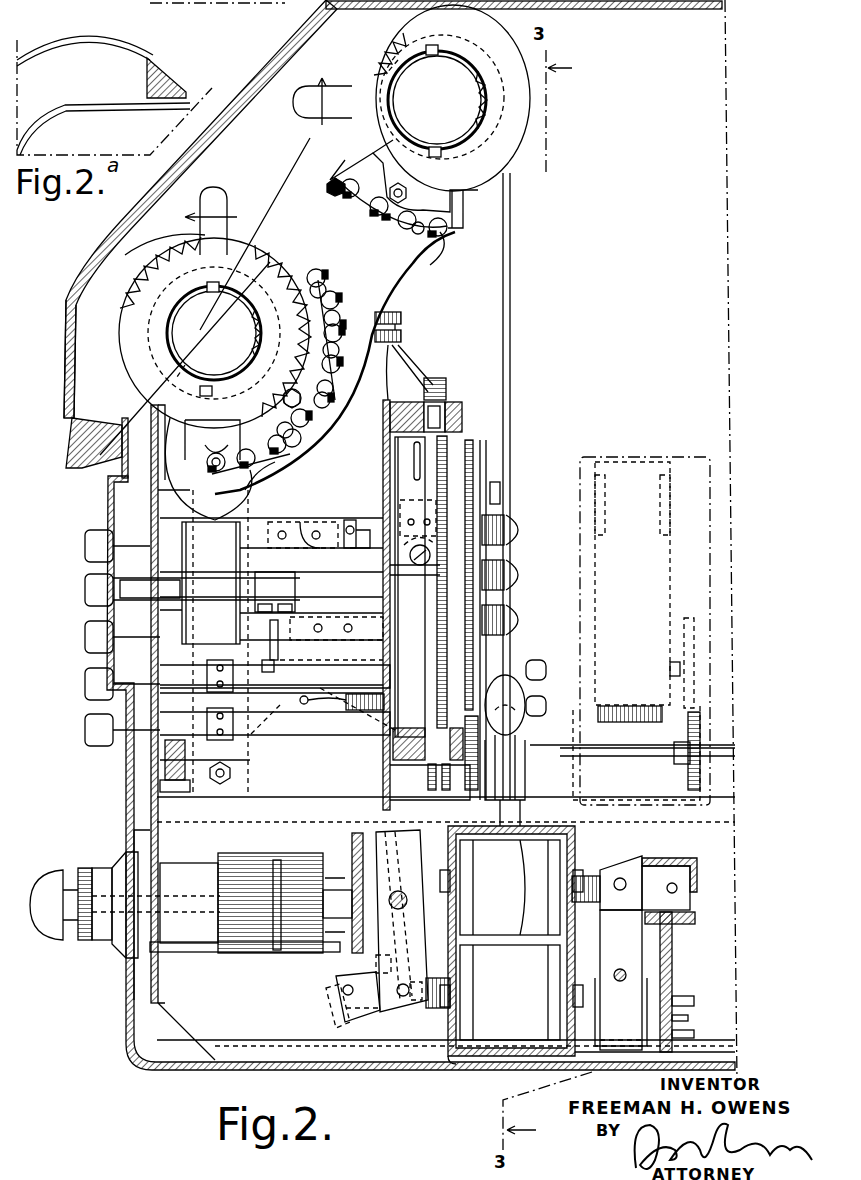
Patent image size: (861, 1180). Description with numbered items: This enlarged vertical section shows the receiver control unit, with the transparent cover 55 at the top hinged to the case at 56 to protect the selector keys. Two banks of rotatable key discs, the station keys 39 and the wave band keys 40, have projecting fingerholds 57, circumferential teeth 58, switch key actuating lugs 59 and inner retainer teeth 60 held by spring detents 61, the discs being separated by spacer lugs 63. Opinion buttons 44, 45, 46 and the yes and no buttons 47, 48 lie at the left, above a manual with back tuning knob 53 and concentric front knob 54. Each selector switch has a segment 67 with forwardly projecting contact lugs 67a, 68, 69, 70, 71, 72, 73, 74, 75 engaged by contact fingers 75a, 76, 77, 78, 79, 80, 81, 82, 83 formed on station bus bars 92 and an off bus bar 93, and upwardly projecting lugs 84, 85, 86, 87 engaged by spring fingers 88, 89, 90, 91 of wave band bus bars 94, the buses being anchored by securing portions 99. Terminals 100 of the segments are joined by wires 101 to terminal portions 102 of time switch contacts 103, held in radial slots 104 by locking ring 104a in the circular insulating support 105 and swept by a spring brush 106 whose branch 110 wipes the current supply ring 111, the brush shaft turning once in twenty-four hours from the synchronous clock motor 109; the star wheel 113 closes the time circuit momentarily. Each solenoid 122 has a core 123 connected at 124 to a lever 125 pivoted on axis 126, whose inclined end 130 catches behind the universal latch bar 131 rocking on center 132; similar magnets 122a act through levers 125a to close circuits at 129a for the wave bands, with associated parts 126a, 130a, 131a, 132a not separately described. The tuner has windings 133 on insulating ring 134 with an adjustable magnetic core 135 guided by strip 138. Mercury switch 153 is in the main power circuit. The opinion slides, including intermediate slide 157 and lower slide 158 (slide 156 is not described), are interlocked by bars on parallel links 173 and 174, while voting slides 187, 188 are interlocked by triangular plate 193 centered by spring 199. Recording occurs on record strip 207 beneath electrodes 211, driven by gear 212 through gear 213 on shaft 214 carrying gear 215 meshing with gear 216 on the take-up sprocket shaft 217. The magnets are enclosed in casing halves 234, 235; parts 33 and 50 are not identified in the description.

In FIG. 2, the flange 33 is at (122, 952).
In FIG. 2, the rotatable keys 39 is at (200, 228).
In FIG. 2, the second bank of keys 40 is at (362, 74).
In FIG. 2, the opinion button 44 is at (85, 546).
In FIG. 2, the opinion button 45 is at (85, 585).
In FIG. 2, the opinion button 46 is at (85, 632).
In FIG. 2, the yes button 47 is at (85, 680).
In FIG. 2, the no button 48 is at (85, 727).
In FIG. 2, the casing 50 is at (642, 9).
In FIG. 2, the back knob 53 is at (100, 866).
In FIG. 2, the front knob 54 is at (60, 868).
In FIG. 2a, the transparent cover 55 is at (38, 57).
In FIG. 2, the transparent cover 55 is at (75, 262).
In FIG. 2a, the hinge connection 56 is at (183, 95).
In FIG. 2, the fingerholds 57 is at (296, 102).
In FIG. 2, the circumferential teeth 58 is at (105, 317).
In FIG. 2, the switch key actuating lugs 59 is at (200, 432).
In FIG. 2, the retainer teeth 60 is at (255, 372).
In FIG. 2, the spring detents 61 is at (256, 340).
In FIG. 2, the spacer lugs 63 is at (430, 50).
In FIG. 2, the segments 67 is at (392, 286).
In FIG. 2, the contact lug 67a is at (322, 275).
In FIG. 2, the contact lug 68 is at (334, 282).
In FIG. 2, the contact lug 69 is at (346, 326).
In FIG. 2, the contact lug 70 is at (347, 360).
In FIG. 2, the contact lug 71 is at (336, 396).
In FIG. 2, the contact lug 72 is at (312, 420).
In FIG. 2, the contact lug 73 is at (296, 446).
In FIG. 2, the contact lug 74 is at (262, 462).
In FIG. 2, the contact lug 75 is at (228, 470).
In FIG. 2, the contact finger 75a is at (308, 282).
In FIG. 2, the contact finger 76 is at (326, 306).
In FIG. 2, the contact finger 77 is at (322, 328).
In FIG. 2, the contact finger 78 is at (325, 354).
In FIG. 2, the contact finger 79 is at (320, 382).
In FIG. 2, the contact finger 80 is at (295, 418).
In FIG. 2, the contact finger 81 is at (270, 440).
In FIG. 2, the contact finger 82 is at (246, 452).
In FIG. 2, the contact finger 83 is at (208, 456).
In FIG. 2, the contact lug 84 is at (352, 202).
In FIG. 2, the contact lug 85 is at (380, 222).
In FIG. 2, the contact lug 86 is at (416, 236).
In FIG. 2, the contact lug 87 is at (450, 230).
In FIG. 2, the spring finger 88 is at (352, 180).
In FIG. 2, the spring finger 89 is at (378, 200).
In FIG. 2, the spring finger 90 is at (408, 216).
In FIG. 2, the spring finger 91 is at (464, 220).
In FIG. 2, the bus bars 92 is at (345, 304).
In FIG. 2, the off bus bar 93 is at (205, 480).
In FIG. 2, the wave band bus bars 94 is at (442, 248).
In FIG. 2, the securing portions 99 is at (290, 468).
In FIG. 2, the terminals 100 is at (405, 320).
In FIG. 2, the wires 101 is at (422, 350).
In FIG. 2, the terminal portions 102 is at (446, 382).
In FIG. 2, the time switch contacts 103 is at (462, 414).
In FIG. 2, the radial slots 104 is at (416, 403).
In FIG. 2, the locking ring 104a is at (388, 408).
In FIG. 2, the circular insulating support 105 is at (456, 404).
In FIG. 2, the spring brush 106 is at (470, 447).
In FIG. 2, the synchronous clock motor 109 is at (271, 642).
In FIG. 2, the branch 110 is at (412, 452).
In FIG. 2, the current supply ring 111 is at (415, 587).
In FIG. 2, the star wheel 113 is at (296, 652).
In FIG. 2, the solenoid 122 is at (511, 928).
In FIG. 2, the magnets 122a is at (510, 887).
In FIG. 2, the core 123 is at (440, 1014).
In FIG. 2, the connection 124 is at (410, 1004).
In FIG. 2, the lever 125 is at (420, 946).
In FIG. 2, the levers 125a is at (640, 930).
In FIG. 2, the axis 126 is at (398, 890).
In FIG. 2, the pivot pin 126a is at (618, 982).
In FIG. 2, the wave band contacts 129a is at (658, 1024).
In FIG. 2, the inclined lower end 130 is at (384, 1022).
In FIG. 2, the lever 130a is at (620, 866).
In FIG. 2, the universal latch bar 131 is at (330, 1028).
In FIG. 2, the bracket 131a is at (680, 860).
In FIG. 2, the center 132 is at (340, 980).
In FIG. 2, the pin 132a is at (678, 890).
In FIG. 2, the windings 133 is at (246, 950).
In FIG. 2, the insulating ring 134 is at (290, 893).
In FIG. 2, the magnetic core 135 is at (192, 862).
In FIG. 2, the longitudinal guide strip 138 is at (188, 960).
In FIG. 2, the mercury switch 153 is at (515, 680).
In FIG. 2, the spring contact 156 is at (530, 528).
In FIG. 2, the intermediate slide 157 is at (530, 576).
In FIG. 2, the lower slide 158 is at (530, 620).
In FIG. 2, the parallel links 173 is at (332, 522).
In FIG. 2, the parallel links 174 is at (302, 522).
In FIG. 2, the yes slide 187 is at (546, 670).
In FIG. 2, the no slide 188 is at (546, 704).
In FIG. 2, the triangular plate 193 is at (312, 718).
In FIG. 2, the spring 199 is at (352, 704).
In FIG. 2, the record strip 207 is at (645, 631).
In FIG. 2, the electrodes 211 is at (630, 722).
In FIG. 2, the gear 212 is at (474, 470).
In FIG. 2, the gear 213 is at (468, 792).
In FIG. 2, the shaft 214 is at (650, 756).
In FIG. 2, the gear 215 is at (690, 780).
In FIG. 2, the gear 216 is at (682, 690).
In FIG. 2, the take-up sprocket shaft 217 is at (672, 668).
In FIG. 2, the casing half 234 is at (447, 1060).
In FIG. 2, the casing half 235 is at (583, 1066).